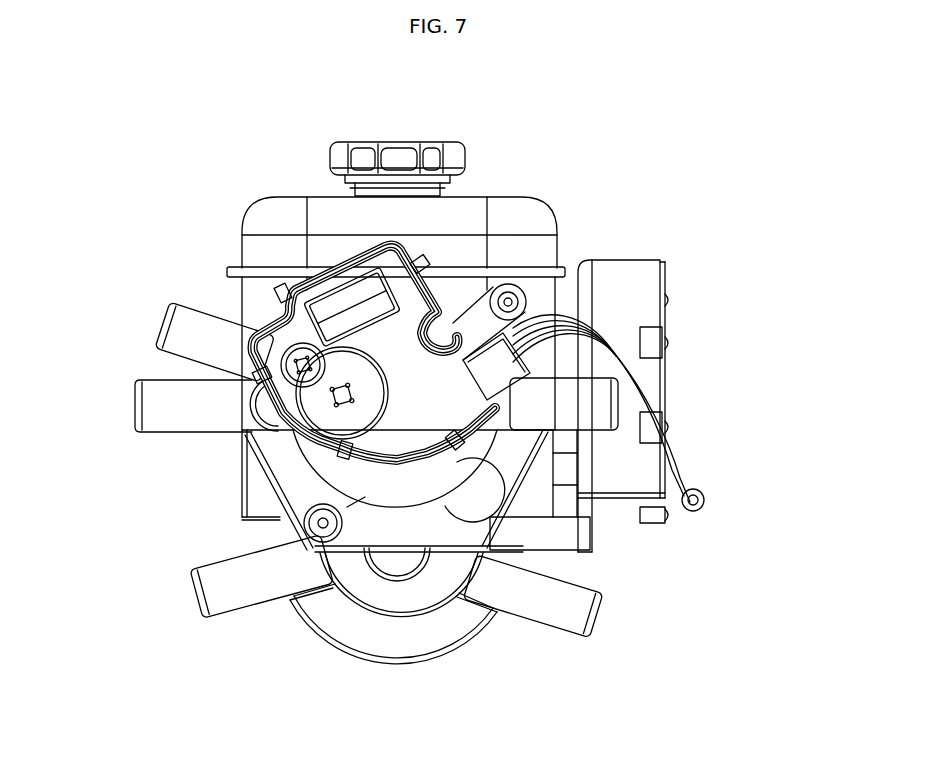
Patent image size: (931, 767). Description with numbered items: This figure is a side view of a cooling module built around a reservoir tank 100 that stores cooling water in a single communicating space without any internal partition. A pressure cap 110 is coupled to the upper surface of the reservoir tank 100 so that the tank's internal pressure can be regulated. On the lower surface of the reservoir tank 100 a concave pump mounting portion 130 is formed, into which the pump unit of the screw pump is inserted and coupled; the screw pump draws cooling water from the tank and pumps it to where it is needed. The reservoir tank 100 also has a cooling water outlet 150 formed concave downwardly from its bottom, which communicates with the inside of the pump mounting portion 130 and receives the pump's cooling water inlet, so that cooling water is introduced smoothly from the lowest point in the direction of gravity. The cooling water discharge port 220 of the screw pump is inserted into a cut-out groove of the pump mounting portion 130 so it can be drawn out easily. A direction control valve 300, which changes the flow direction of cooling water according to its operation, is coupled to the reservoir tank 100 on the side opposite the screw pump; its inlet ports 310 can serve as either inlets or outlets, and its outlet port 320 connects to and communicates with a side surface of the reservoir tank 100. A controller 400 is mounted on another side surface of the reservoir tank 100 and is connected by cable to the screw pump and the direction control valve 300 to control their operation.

The reservoir tank 100 is at (480, 196).
The pressure cap 110 is at (426, 141).
The pump mounting portion 130 is at (400, 608).
The cooling water outlet 150 is at (377, 573).
The cooling water discharge port 220 is at (195, 602).
The direction control valve 300 is at (497, 447).
The inlet port 310 is at (138, 407).
The outlet port 320 is at (472, 528).
The controller 400 is at (663, 279).